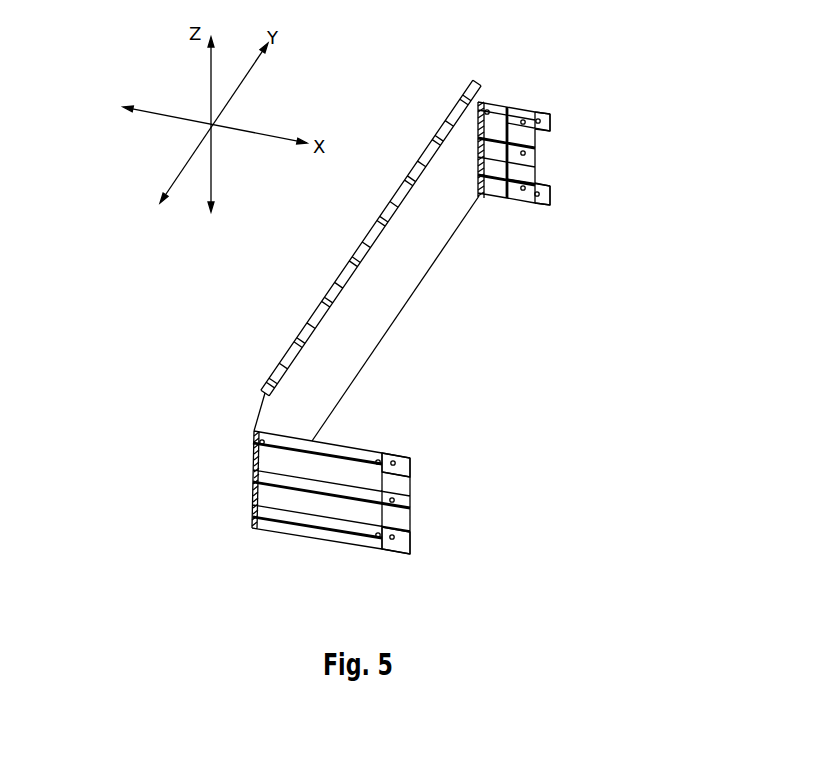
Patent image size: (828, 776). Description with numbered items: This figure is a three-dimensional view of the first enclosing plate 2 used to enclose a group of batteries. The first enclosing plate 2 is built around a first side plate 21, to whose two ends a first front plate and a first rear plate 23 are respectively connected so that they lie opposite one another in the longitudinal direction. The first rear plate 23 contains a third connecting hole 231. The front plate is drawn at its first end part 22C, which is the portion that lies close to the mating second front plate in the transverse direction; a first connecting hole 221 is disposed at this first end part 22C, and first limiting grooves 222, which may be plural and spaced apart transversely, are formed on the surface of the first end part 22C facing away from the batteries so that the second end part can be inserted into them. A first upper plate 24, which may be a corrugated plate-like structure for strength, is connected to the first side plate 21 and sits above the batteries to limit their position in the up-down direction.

The first enclosing plate 2 is at (307, 240).
The first side plate 21 is at (407, 281).
The first end part 22C is at (380, 503).
The first connecting hole 221 is at (392, 458).
The first limiting groove 222 is at (410, 468).
The first rear plate 23 is at (522, 176).
The third connecting hole 231 is at (515, 110).
The first upper plate 24 is at (426, 157).